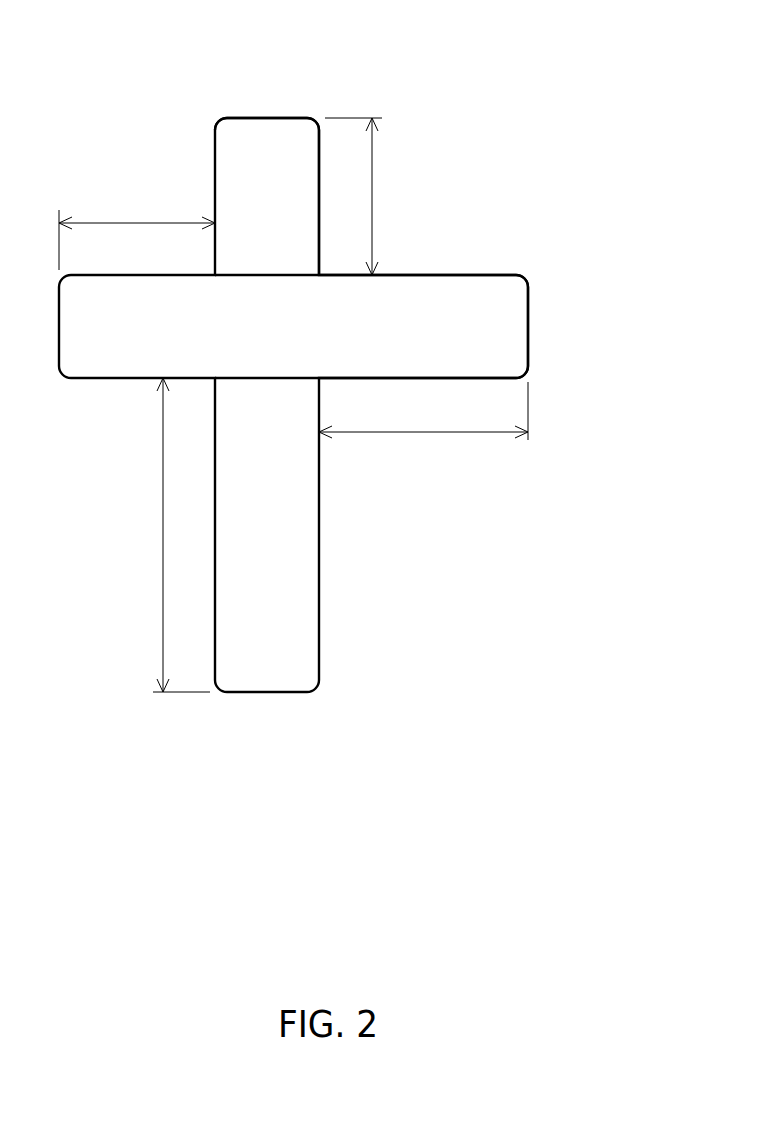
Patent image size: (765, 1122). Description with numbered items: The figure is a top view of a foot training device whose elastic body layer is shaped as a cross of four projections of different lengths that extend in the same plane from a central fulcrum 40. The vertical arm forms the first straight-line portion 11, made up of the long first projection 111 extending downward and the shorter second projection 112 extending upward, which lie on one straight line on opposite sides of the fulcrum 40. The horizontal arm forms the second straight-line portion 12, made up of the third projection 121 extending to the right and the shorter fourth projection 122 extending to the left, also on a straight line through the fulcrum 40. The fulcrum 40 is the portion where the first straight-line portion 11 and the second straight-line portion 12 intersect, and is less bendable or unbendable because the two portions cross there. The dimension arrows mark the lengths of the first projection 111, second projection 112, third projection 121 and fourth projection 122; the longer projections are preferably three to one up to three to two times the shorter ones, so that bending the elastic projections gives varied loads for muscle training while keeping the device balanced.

The first straight-line portion 11 is at (265, 137).
The second straight-line portion 12 is at (505, 332).
The fulcrum 40 is at (268, 325).
The first projection 111 is at (166, 535).
The second projection 112 is at (372, 196).
The third projection 121 is at (423, 411).
The fourth projection 122 is at (137, 234).